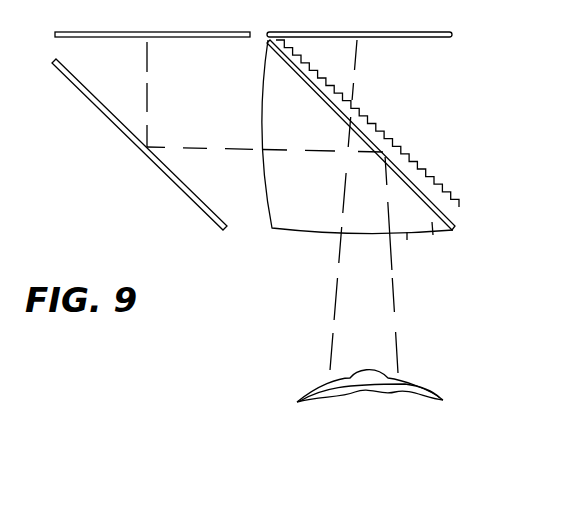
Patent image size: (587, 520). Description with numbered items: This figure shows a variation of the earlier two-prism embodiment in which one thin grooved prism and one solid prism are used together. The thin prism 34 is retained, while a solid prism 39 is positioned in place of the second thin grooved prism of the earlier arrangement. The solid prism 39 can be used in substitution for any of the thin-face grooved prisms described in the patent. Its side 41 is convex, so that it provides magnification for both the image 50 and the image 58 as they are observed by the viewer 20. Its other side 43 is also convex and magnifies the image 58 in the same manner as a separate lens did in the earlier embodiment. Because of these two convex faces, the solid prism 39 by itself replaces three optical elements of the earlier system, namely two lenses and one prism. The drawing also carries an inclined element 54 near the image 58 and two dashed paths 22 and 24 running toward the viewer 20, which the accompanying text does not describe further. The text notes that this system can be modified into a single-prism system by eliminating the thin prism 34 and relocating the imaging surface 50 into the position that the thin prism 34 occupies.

The viewer 20 is at (420, 393).
The light ray 22 is at (335, 298).
The light ray 24 is at (396, 337).
The thin prism 34 is at (417, 166).
The solid prism 39 is at (433, 235).
The side of prism 41 is at (407, 232).
The side of prism 43 is at (260, 126).
The image 50 is at (413, 38).
The mirror 54 is at (111, 118).
The image 58 is at (118, 33).